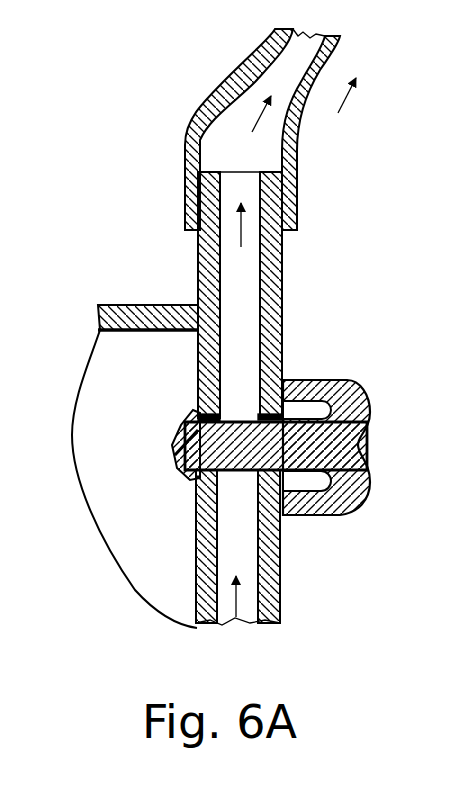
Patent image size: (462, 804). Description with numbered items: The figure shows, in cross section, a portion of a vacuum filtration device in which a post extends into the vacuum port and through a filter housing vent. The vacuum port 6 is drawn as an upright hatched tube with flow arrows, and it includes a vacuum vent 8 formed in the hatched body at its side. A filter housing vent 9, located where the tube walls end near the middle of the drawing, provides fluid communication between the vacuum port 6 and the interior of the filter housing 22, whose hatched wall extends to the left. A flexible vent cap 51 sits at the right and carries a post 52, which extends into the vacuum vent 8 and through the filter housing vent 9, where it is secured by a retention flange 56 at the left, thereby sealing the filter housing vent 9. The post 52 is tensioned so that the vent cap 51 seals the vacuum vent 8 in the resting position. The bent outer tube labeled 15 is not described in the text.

The outer bent tube 15 is at (293, 203).
The vacuum port 6 is at (243, 347).
The filter housing 22 is at (140, 305).
The filter housing vent 9 is at (227, 398).
The flexible vent cap 51 is at (354, 380).
The vacuum vent 8 is at (333, 514).
The post 52 is at (246, 473).
The retention flange 56 is at (192, 470).